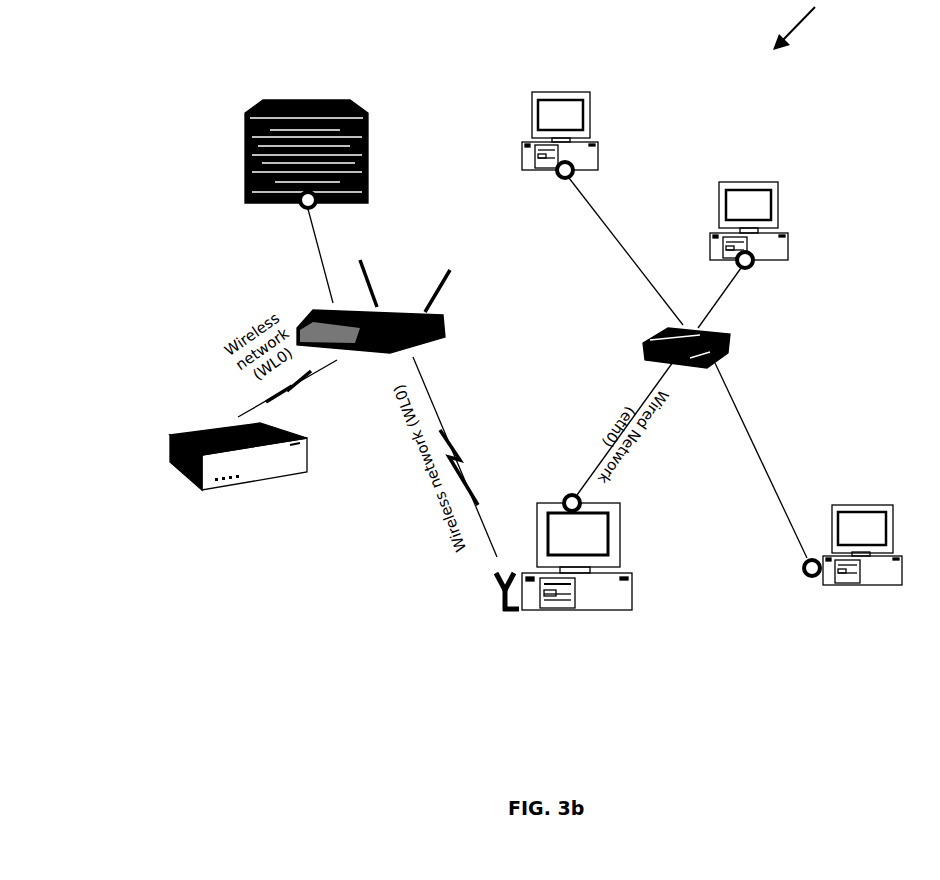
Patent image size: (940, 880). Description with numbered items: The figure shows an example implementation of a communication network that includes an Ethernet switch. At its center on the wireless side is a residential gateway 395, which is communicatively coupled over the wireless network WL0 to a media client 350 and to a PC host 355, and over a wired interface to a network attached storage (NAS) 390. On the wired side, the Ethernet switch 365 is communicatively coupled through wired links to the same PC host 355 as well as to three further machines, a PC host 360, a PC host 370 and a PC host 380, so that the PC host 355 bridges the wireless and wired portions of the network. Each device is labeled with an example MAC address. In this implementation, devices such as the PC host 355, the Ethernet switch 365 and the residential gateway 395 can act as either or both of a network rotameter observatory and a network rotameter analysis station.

The network attached storage (NAS) 390 is at (270, 137).
The residential gateway 395 is at (423, 315).
The media client 350 is at (175, 492).
The PC host 355 is at (524, 579).
The PC host 360 is at (863, 559).
The Ethernet switch 365 is at (722, 349).
The PC host 370 is at (541, 139).
The PC host 380 is at (772, 206).